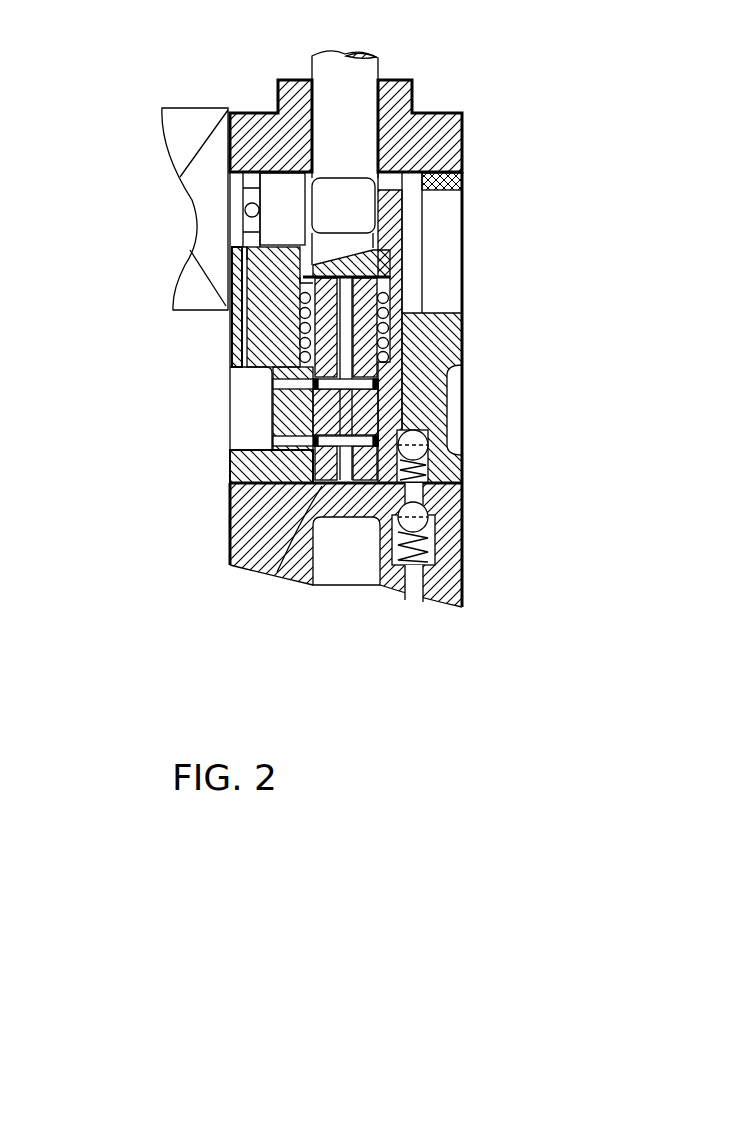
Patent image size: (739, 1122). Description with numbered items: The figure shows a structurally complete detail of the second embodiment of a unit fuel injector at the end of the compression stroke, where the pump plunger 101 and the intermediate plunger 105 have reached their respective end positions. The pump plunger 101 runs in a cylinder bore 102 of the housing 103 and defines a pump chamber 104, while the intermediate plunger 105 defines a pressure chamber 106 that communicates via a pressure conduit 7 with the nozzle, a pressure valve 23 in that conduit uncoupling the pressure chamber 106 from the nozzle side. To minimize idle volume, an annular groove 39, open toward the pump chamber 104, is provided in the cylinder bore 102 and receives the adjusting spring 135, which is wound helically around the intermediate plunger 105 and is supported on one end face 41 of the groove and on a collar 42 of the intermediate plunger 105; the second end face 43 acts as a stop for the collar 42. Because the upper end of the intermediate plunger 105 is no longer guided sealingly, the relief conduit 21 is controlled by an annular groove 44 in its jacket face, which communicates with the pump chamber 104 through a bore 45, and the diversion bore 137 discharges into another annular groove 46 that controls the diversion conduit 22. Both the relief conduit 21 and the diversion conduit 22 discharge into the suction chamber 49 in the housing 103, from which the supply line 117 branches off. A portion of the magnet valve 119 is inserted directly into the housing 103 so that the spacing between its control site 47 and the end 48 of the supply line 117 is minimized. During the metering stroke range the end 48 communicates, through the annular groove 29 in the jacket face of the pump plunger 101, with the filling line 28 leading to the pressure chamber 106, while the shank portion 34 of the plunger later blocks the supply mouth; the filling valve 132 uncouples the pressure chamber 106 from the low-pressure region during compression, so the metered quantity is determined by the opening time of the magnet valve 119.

The pressure conduit 7 is at (413, 585).
The relief conduit 21 is at (275, 397).
The diversion conduit 22 is at (283, 440).
The pressure valve 23 is at (417, 508).
The filling line 28 is at (425, 390).
The annular groove 29 is at (407, 115).
The shank portion 34 is at (355, 245).
The annular groove 39 is at (295, 296).
The end face 41 is at (283, 389).
The collar 42 is at (290, 273).
The second end face 43 is at (240, 257).
The annular groove 44 is at (315, 373).
The bore 45 is at (348, 325).
The annular groove 46 is at (430, 430).
The control site 47 is at (243, 203).
The end of the supply line 48 is at (307, 215).
The suction chamber 49 is at (240, 417).
The pump plunger 101 is at (350, 92).
The cylinder bore 102 is at (277, 478).
The housing 103 is at (272, 130).
The pump chamber 104 is at (358, 270).
The intermediate plunger 105 is at (363, 400).
The pressure chamber 106 is at (230, 495).
The supply line 117 is at (253, 337).
The magnet valve 119 is at (203, 113).
The filling valve 132 is at (418, 452).
The adjusting spring 135 is at (273, 373).
The diversion bore 137 is at (277, 573).